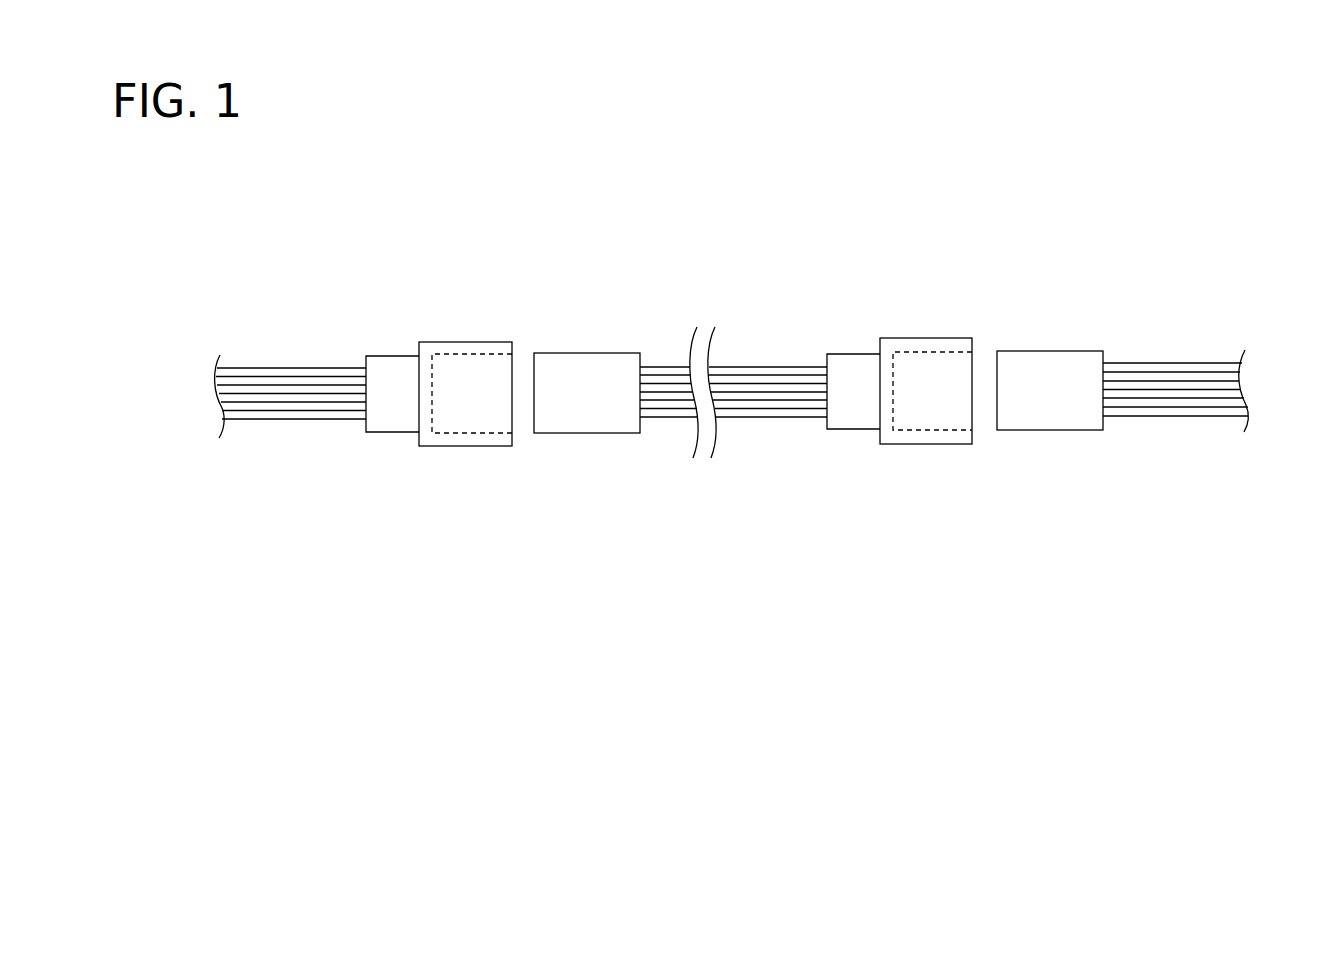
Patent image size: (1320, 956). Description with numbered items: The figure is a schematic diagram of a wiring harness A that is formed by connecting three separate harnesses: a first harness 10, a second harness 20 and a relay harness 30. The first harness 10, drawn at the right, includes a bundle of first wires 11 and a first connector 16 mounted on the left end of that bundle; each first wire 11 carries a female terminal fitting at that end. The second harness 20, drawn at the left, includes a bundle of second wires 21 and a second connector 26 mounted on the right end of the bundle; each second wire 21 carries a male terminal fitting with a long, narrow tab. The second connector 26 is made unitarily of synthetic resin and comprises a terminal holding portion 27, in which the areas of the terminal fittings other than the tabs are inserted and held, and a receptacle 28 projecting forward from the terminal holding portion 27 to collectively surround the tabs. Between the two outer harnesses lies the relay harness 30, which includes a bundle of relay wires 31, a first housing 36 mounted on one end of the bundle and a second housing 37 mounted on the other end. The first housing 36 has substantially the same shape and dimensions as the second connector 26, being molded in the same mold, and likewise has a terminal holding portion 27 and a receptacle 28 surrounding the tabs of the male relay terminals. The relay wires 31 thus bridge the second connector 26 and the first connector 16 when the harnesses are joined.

The wiring harness A is at (1170, 210).
The first harness 10 is at (1213, 302).
The first wires 11 is at (1215, 403).
The first connector 16 is at (1049, 419).
The second harness 20 is at (398, 283).
The second wires 21 is at (262, 408).
The second connector 26 is at (370, 528).
The terminal holding portion 27 is at (393, 423).
The receptacle 28 is at (460, 440).
The relay harness 30 is at (815, 278).
The relay wires 31 is at (772, 396).
The first housing 36 is at (943, 522).
The second housing 37 is at (588, 422).